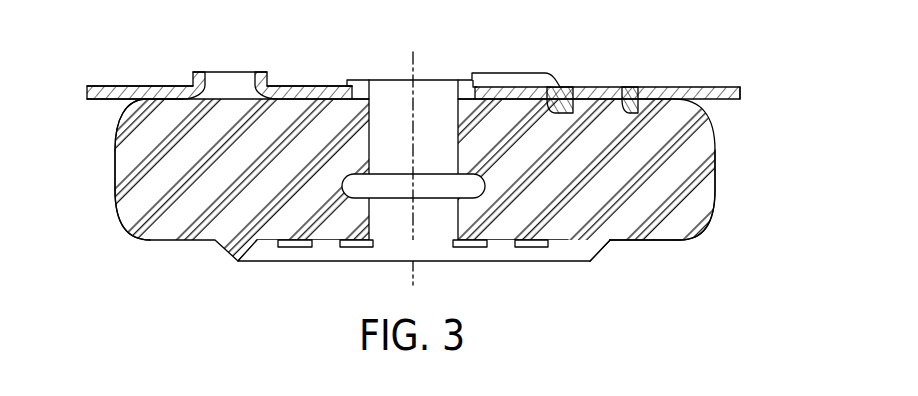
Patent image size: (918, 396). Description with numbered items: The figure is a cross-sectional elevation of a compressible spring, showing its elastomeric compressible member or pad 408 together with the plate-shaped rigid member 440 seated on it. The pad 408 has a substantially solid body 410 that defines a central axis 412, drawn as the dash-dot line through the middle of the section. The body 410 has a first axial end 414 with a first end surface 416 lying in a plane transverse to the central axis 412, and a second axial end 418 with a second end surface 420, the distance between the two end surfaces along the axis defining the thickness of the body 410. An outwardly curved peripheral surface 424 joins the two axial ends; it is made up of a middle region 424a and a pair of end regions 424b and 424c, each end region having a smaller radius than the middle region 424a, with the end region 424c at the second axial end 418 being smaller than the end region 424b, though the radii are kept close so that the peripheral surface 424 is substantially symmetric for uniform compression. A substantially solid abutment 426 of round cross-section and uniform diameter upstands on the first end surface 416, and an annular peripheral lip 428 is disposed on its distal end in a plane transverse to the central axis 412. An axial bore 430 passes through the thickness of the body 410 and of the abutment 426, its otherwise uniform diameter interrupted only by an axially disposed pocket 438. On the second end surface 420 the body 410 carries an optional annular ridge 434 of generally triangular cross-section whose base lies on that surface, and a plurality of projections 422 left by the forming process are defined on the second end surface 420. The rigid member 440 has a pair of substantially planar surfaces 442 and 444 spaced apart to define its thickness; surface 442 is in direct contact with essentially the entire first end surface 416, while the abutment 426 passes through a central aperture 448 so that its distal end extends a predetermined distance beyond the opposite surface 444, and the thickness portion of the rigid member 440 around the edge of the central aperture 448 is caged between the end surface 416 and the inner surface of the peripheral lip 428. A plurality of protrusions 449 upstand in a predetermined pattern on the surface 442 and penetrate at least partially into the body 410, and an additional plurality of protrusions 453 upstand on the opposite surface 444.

The elastomeric compressible member 408 is at (728, 162).
The substantially solid body 410 is at (640, 207).
The central axis 412 is at (415, 62).
The first axial end 414 is at (685, 99).
The first end surface 416 is at (658, 100).
The second axial end 418 is at (660, 242).
The second end surface 420 is at (633, 242).
The projections 422 is at (502, 295).
The outwardly curved peripheral surface 424 is at (720, 195).
The middle region 424a is at (115, 190).
The end region 424b is at (118, 118).
The end region 424c is at (138, 238).
The substantially solid abutment 426 is at (362, 88).
The peripheral lip 428 is at (347, 82).
The axial bore 430 is at (372, 227).
The ridge 434 is at (226, 252).
The axially disposed pocket 438 is at (443, 200).
The rigid member 440 is at (88, 68).
The substantially planar surface 442 is at (103, 101).
The substantially planar surface 444 is at (117, 93).
The central aperture 448 is at (473, 90).
The protrusions 449 is at (575, 100).
The protrusions 453 is at (196, 73).